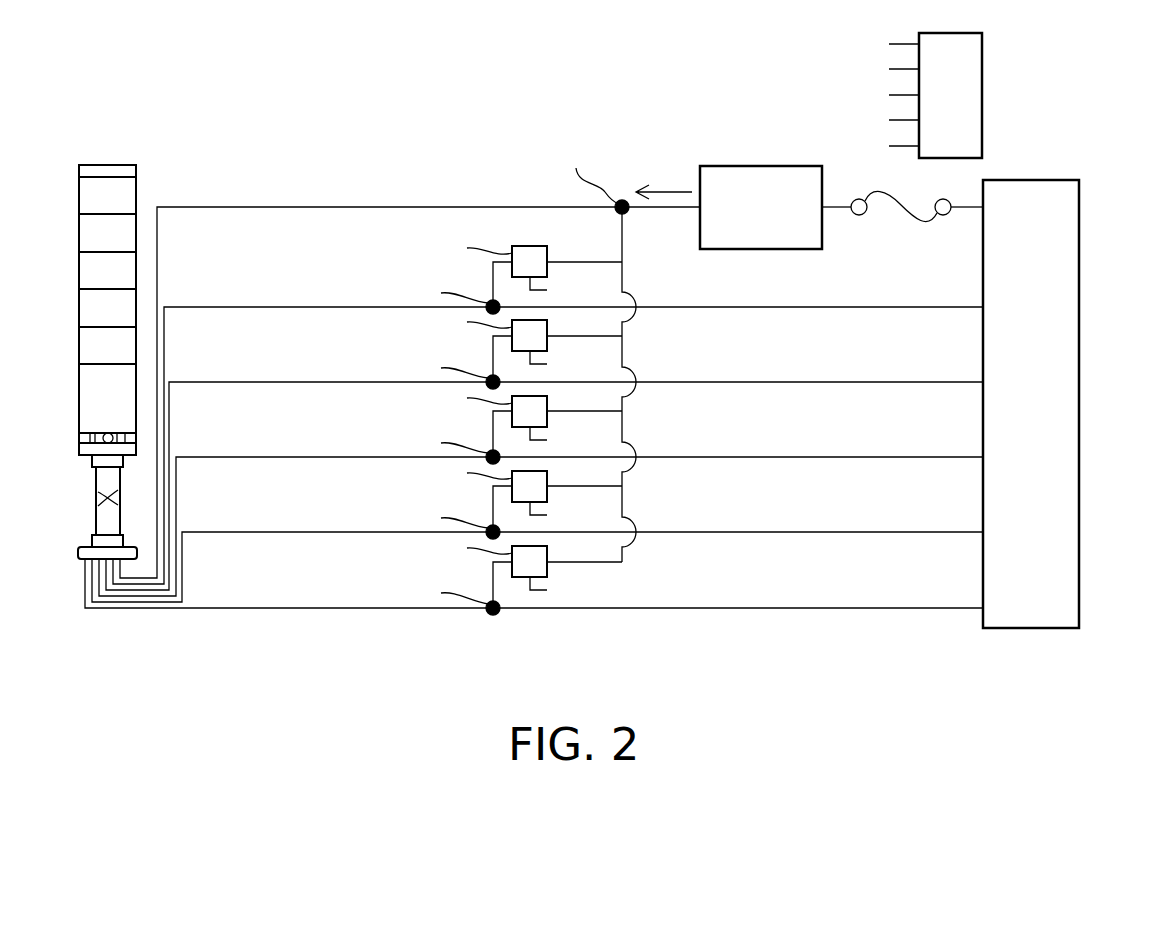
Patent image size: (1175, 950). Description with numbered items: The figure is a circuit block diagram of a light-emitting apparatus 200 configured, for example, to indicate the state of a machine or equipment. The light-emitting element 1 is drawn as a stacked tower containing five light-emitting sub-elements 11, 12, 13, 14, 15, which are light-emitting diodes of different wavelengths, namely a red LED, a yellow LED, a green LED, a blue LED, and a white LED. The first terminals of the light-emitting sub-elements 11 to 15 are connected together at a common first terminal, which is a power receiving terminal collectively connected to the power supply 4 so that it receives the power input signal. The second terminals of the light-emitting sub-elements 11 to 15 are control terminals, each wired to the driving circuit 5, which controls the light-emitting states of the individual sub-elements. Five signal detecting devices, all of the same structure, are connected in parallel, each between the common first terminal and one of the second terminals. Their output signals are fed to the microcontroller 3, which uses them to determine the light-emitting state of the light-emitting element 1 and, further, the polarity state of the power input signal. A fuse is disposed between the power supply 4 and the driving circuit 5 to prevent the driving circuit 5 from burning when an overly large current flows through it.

The light-emitting element 1 is at (93, 165).
The light-emitting sub-element 11 is at (84, 193).
The light-emitting sub-element 12 is at (84, 231).
The light-emitting sub-element 13 is at (84, 269).
The light-emitting sub-element 14 is at (84, 306).
The light-emitting sub-element 15 is at (84, 343).
The microcontroller 3 is at (982, 93).
The power supply 4 is at (745, 166).
The driving circuit 5 is at (1079, 403).
The light-emitting apparatus 200 is at (1150, 665).